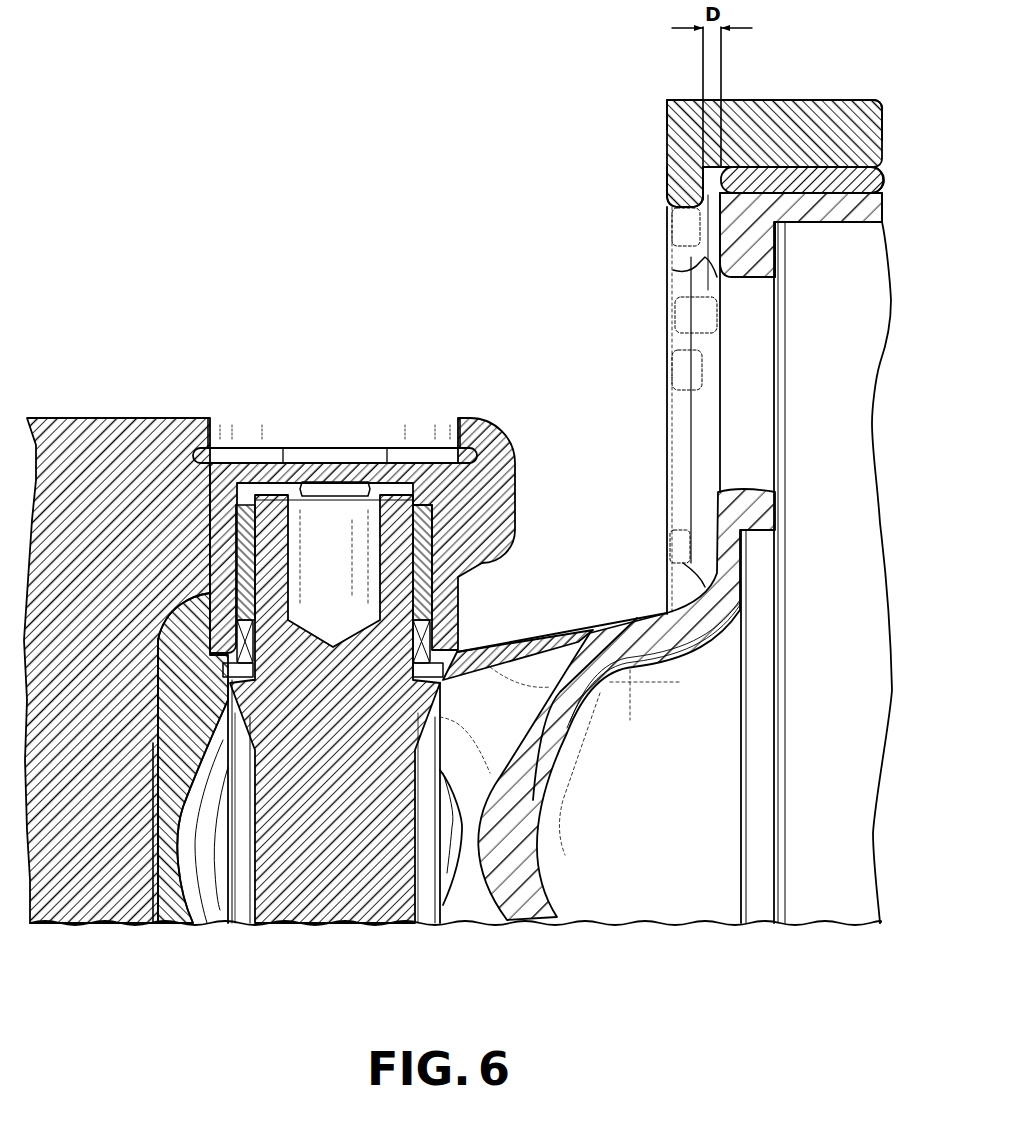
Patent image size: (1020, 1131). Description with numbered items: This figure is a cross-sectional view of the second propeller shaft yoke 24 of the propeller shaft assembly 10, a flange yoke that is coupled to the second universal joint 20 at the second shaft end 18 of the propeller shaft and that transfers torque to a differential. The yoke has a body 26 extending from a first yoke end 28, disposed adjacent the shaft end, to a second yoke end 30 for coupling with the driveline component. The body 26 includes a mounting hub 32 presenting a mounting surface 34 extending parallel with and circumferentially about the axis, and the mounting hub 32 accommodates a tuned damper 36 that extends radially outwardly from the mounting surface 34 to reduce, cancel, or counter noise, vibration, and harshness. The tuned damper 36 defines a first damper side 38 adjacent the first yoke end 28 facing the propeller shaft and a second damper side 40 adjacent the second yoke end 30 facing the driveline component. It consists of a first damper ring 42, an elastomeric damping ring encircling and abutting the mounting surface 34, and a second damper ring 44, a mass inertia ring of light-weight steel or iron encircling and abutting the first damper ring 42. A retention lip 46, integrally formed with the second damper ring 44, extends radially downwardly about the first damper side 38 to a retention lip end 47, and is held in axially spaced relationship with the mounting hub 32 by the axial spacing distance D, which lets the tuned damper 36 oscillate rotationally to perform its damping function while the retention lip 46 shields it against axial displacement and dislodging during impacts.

The propeller shaft assembly 10 is at (194, 120).
The second shaft end 18 is at (127, 418).
The second universal joint 20 is at (465, 418).
The second propeller shaft yoke 24 is at (572, 625).
The body 26 is at (650, 883).
The first yoke end 28 is at (207, 912).
The second yoke end 30 is at (882, 207).
The mounting hub 32 is at (777, 257).
The mounting surface 34 is at (862, 183).
The tuned damper 36 is at (690, 100).
The first damper side 38 is at (667, 117).
The second damper side 40 is at (882, 107).
The first damper ring 42 is at (787, 180).
The second damper ring 44 is at (820, 147).
The retention lip 46 is at (670, 190).
The retention lip end 47 is at (675, 213).